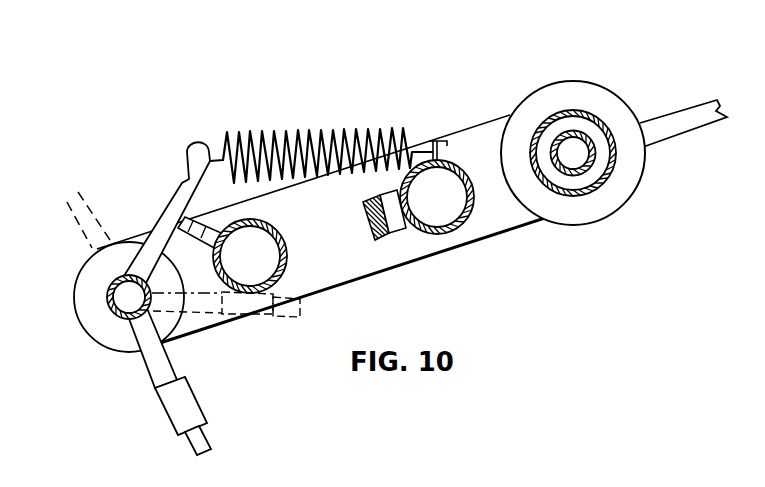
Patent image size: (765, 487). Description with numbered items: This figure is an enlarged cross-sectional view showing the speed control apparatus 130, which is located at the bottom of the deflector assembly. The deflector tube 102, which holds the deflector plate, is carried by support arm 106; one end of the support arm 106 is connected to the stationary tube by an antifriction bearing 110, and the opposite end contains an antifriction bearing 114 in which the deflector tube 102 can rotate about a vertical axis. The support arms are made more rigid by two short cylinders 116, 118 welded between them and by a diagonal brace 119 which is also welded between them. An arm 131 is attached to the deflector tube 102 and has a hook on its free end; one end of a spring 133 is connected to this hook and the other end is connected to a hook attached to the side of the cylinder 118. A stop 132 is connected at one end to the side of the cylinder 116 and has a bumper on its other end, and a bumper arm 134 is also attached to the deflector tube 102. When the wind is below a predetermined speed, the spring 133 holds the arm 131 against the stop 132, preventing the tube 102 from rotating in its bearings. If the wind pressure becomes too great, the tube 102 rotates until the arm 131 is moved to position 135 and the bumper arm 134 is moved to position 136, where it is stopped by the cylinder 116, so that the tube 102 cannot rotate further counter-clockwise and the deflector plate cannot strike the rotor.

The deflector tube 102 is at (110, 297).
The support arm 106 is at (380, 268).
The antifriction bearing 110 is at (570, 82).
The antifriction bearing 114 is at (100, 341).
The short cylinder 116 is at (278, 236).
The short cylinder 118 is at (473, 204).
The diagonal brace 119 is at (385, 230).
The speed control apparatus 130 is at (265, 64).
The arm 131 is at (158, 218).
The stop 132 is at (189, 221).
The spring 133 is at (307, 143).
The bumper arm 134 is at (167, 417).
The position of arm 131 135 is at (80, 226).
The position of bumper arm 134 136 is at (266, 318).